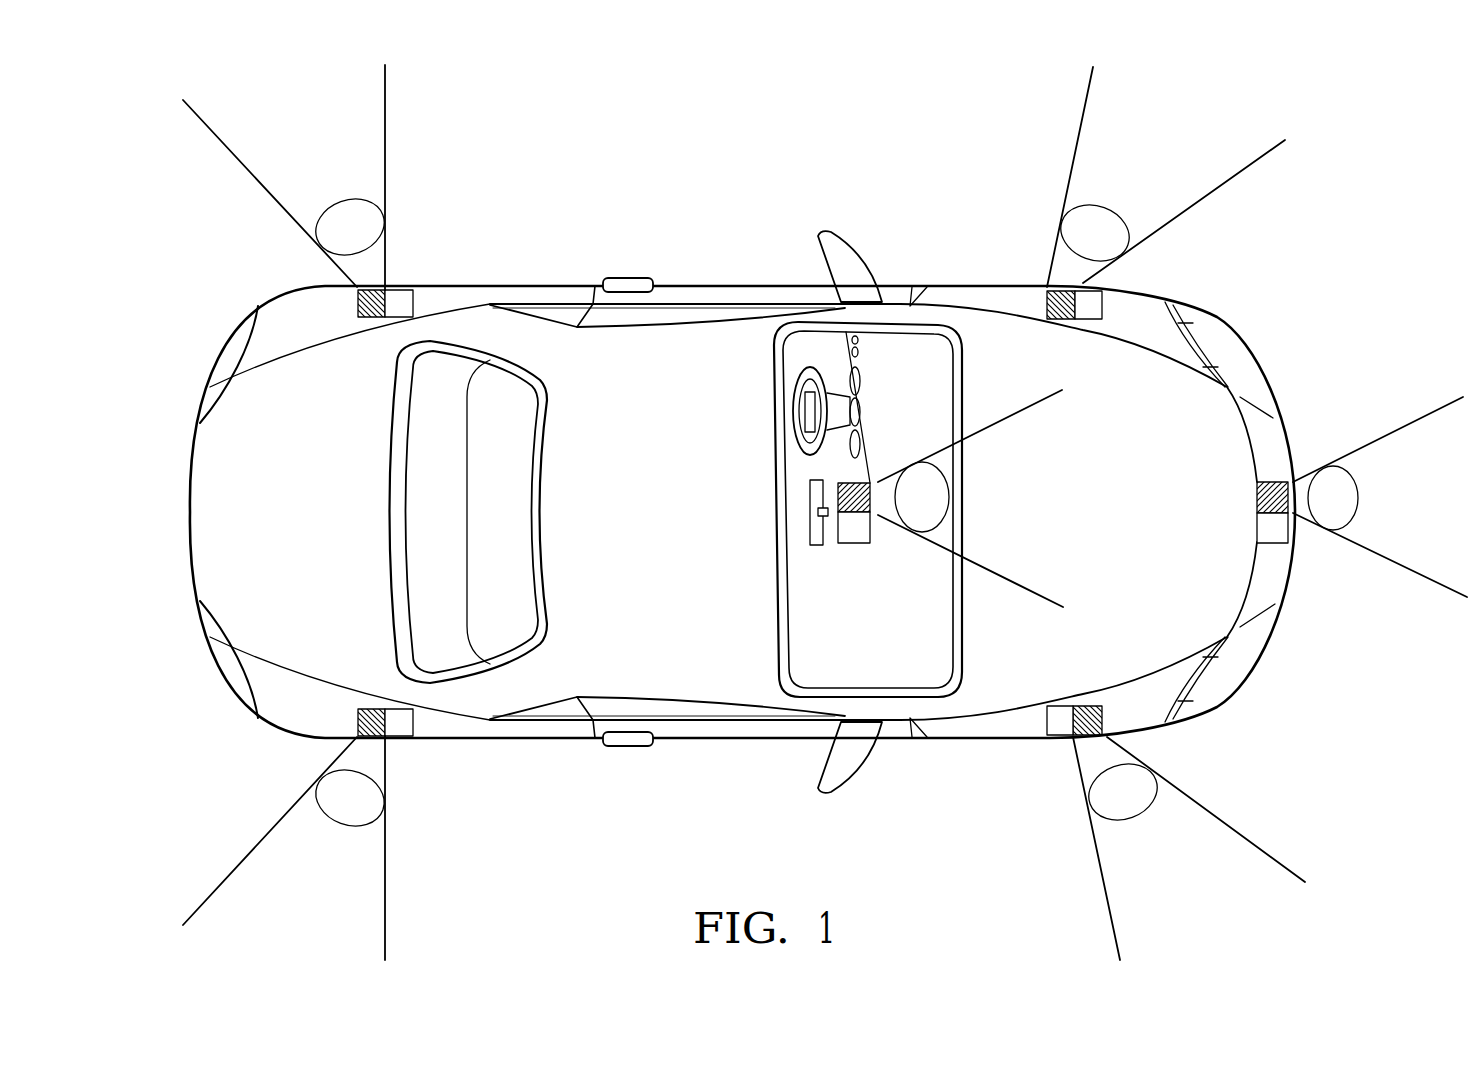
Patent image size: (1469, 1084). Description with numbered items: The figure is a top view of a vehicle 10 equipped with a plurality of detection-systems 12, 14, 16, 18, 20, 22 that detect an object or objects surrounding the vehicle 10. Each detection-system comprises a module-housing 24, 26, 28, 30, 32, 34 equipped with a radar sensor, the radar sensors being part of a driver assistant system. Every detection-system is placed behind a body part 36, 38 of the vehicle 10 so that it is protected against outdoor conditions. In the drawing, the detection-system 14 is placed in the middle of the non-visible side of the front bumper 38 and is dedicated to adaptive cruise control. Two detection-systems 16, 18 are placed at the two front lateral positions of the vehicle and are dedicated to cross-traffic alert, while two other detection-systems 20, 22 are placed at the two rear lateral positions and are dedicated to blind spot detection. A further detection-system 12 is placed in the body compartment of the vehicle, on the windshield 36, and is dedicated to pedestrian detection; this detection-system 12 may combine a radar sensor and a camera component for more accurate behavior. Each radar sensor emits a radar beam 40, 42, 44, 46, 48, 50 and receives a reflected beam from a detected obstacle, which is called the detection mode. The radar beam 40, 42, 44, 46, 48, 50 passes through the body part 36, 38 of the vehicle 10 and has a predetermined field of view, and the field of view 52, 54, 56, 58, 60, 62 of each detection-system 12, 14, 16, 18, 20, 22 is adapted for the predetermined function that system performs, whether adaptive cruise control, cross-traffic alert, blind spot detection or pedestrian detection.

The vehicle 10 is at (1338, 130).
The detection-system 12 is at (833, 547).
The detection-system 14 is at (1264, 473).
The detection-system 16 is at (1112, 718).
The detection-system 18 is at (1040, 268).
The detection-system 20 is at (347, 307).
The detection-system 22 is at (347, 718).
The module-housing 24 is at (853, 535).
The module-housing 26 is at (1045, 310).
The module-housing 28 is at (1265, 545).
The module-housing 30 is at (1047, 722).
The module-housing 32 is at (413, 725).
The module-housing 34 is at (413, 300).
The windshield 36 is at (805, 350).
The front bumper 38 is at (1268, 422).
The radar beam 40 is at (1435, 406).
The radar beam 42 is at (995, 573).
The radar beam 44 is at (1080, 126).
The radar beam 46 is at (1285, 851).
The radar beam 48 is at (222, 874).
The radar beam 50 is at (222, 154).
The field of view 52 is at (1348, 513).
The field of view 54 is at (920, 480).
The field of view 56 is at (1090, 213).
The field of view 58 is at (1117, 810).
The field of view 60 is at (348, 817).
The field of view 62 is at (348, 207).